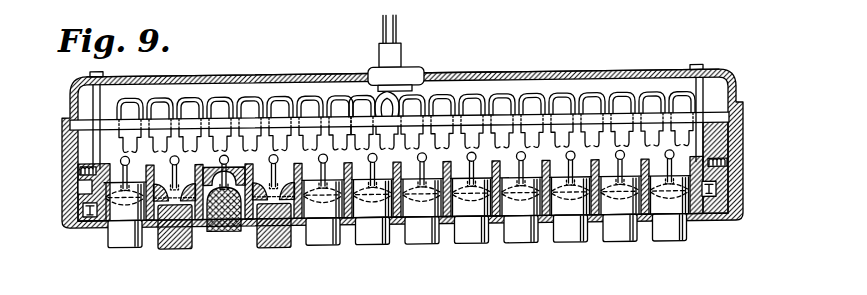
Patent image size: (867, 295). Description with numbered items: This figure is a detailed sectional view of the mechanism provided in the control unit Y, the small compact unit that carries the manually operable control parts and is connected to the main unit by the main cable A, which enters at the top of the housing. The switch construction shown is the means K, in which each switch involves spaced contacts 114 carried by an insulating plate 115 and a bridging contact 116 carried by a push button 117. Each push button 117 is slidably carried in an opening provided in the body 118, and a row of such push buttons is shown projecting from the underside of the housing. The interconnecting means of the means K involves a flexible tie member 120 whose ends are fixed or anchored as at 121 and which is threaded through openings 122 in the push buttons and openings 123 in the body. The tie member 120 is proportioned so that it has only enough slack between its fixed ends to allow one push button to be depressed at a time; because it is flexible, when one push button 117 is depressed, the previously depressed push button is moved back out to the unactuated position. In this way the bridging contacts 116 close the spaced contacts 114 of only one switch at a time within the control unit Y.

The insulating plate 115 is at (85, 124).
The spaced contacts 114 is at (72, 144).
The bridging contact 116 is at (70, 166).
The body 118 is at (72, 193).
The anchored ends of tie member 121 is at (80, 208).
The means K is at (78, 246).
The push button 117 is at (122, 244).
The openings in the push buttons 122 is at (196, 243).
The openings in the body 123 is at (268, 244).
The flexible tie member 120 is at (188, 187).
The main cable A is at (414, 61).
The control unit Y is at (485, 74).